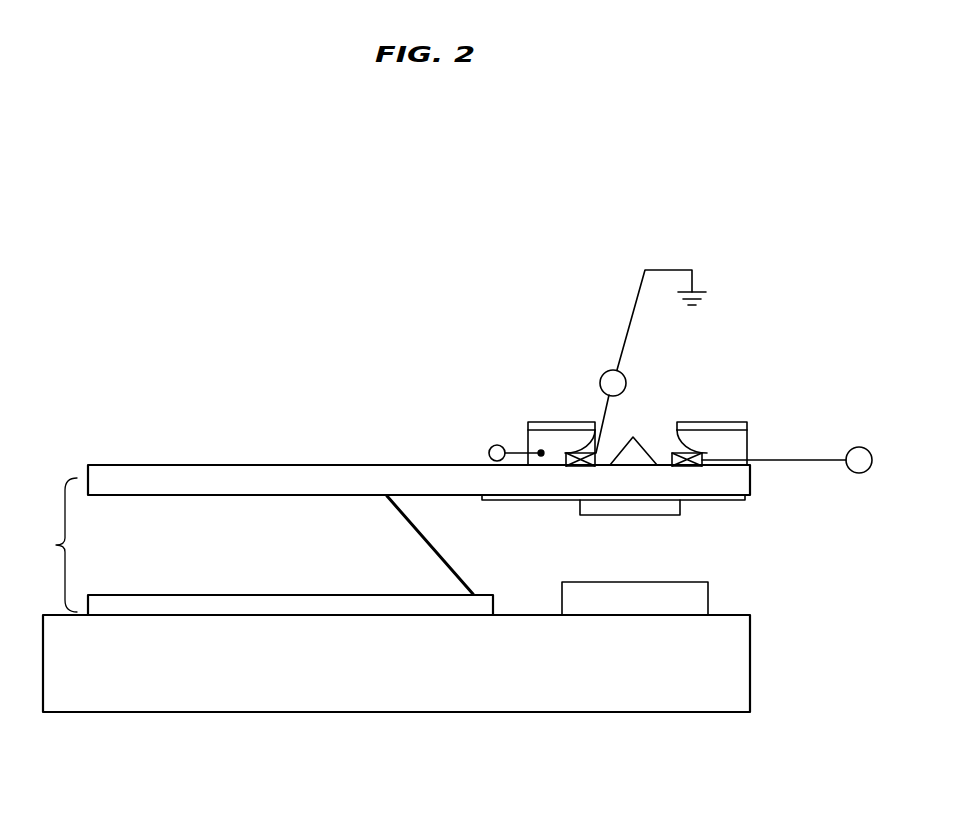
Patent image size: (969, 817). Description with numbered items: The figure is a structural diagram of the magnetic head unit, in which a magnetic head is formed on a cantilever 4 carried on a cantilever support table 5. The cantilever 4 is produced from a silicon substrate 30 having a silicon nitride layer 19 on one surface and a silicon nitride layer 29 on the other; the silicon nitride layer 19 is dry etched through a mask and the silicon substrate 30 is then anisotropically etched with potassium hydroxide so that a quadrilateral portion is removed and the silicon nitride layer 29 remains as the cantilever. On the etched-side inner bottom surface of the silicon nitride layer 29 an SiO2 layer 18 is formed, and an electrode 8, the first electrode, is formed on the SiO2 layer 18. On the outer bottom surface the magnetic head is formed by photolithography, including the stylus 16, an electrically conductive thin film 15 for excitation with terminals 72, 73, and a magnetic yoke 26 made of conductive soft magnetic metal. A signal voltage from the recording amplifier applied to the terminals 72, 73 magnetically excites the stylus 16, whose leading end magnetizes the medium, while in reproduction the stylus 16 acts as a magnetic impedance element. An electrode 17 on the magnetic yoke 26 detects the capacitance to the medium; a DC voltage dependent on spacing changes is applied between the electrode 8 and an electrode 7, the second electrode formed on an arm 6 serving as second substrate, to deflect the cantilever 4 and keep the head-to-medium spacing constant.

The cantilever 4 is at (290, 478).
The cantilever support table 5 is at (56, 545).
The arm 6 is at (460, 698).
The electrode 7 is at (585, 603).
The electrode 8 is at (610, 508).
The electrically conductive thin film 15 is at (595, 466).
The stylus 16 is at (635, 448).
The electrode 17 is at (488, 450).
The SiO2 layer 18 is at (507, 502).
The silicon nitride layer 19 is at (173, 603).
The magnetic yoke 26 is at (551, 445).
The silicon nitride layer 29 is at (707, 425).
The silicon substrate 30 is at (277, 555).
The terminal 72 is at (788, 474).
The terminal 73 is at (637, 361).